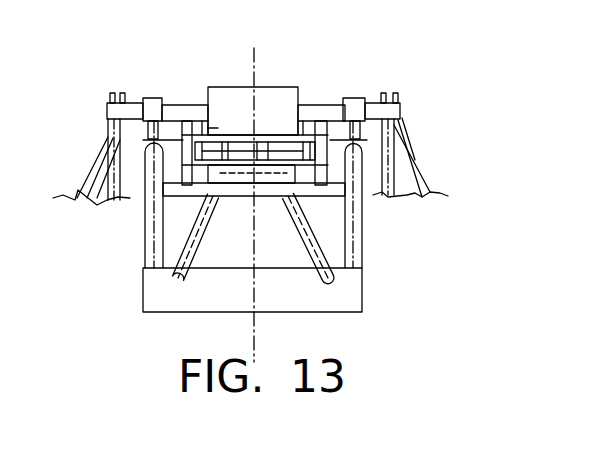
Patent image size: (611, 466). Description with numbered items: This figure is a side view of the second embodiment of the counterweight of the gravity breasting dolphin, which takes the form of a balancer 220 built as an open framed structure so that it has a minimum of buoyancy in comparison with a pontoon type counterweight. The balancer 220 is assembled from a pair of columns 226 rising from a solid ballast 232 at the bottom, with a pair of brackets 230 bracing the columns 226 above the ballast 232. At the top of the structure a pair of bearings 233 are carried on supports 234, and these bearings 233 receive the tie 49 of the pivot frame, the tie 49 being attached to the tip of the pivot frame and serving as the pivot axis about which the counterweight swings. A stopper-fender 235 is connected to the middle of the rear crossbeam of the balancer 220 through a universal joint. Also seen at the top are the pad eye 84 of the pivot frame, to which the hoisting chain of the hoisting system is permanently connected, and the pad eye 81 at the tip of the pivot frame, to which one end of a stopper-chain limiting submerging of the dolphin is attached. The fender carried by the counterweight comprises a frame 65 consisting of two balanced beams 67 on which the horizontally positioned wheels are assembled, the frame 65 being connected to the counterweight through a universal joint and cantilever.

The tie 49 is at (130, 115).
The frame 65 is at (232, 128).
The balanced beam 67 is at (308, 140).
The pad eye 81 is at (110, 95).
The pad eye 84 is at (123, 93).
The balancer 220 is at (507, 182).
The column 226 is at (357, 243).
The bracket 230 is at (200, 228).
The solid ballast 232 is at (347, 298).
The bearing 233 is at (147, 98).
The support 234 is at (360, 120).
The stopper-fender 235 is at (285, 97).